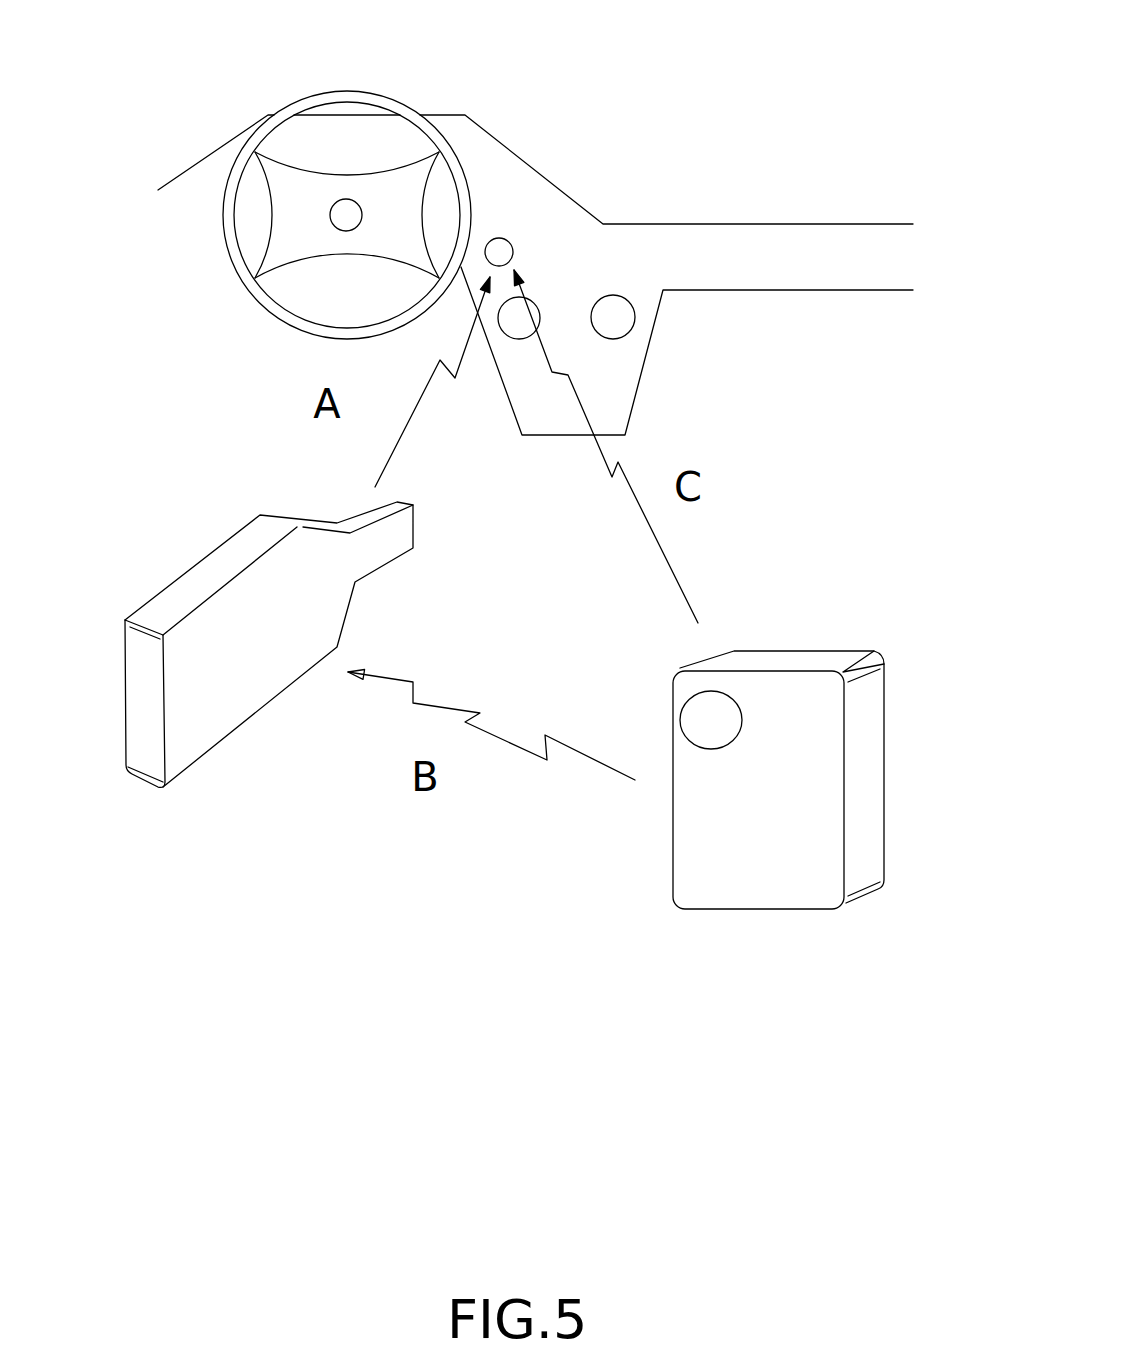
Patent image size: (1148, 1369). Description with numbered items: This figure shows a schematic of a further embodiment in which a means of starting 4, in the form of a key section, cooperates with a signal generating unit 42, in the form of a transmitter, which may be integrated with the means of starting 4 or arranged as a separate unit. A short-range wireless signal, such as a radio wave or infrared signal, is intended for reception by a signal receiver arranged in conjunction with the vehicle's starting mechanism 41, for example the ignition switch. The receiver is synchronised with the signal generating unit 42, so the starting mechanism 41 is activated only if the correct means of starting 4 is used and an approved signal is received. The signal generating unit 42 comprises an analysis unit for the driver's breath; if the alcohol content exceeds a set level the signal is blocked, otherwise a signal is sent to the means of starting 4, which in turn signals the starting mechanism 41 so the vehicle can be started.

The means of starting 4 is at (235, 556).
The starting mechanism 41 is at (503, 243).
The signal generating unit 42 is at (790, 693).